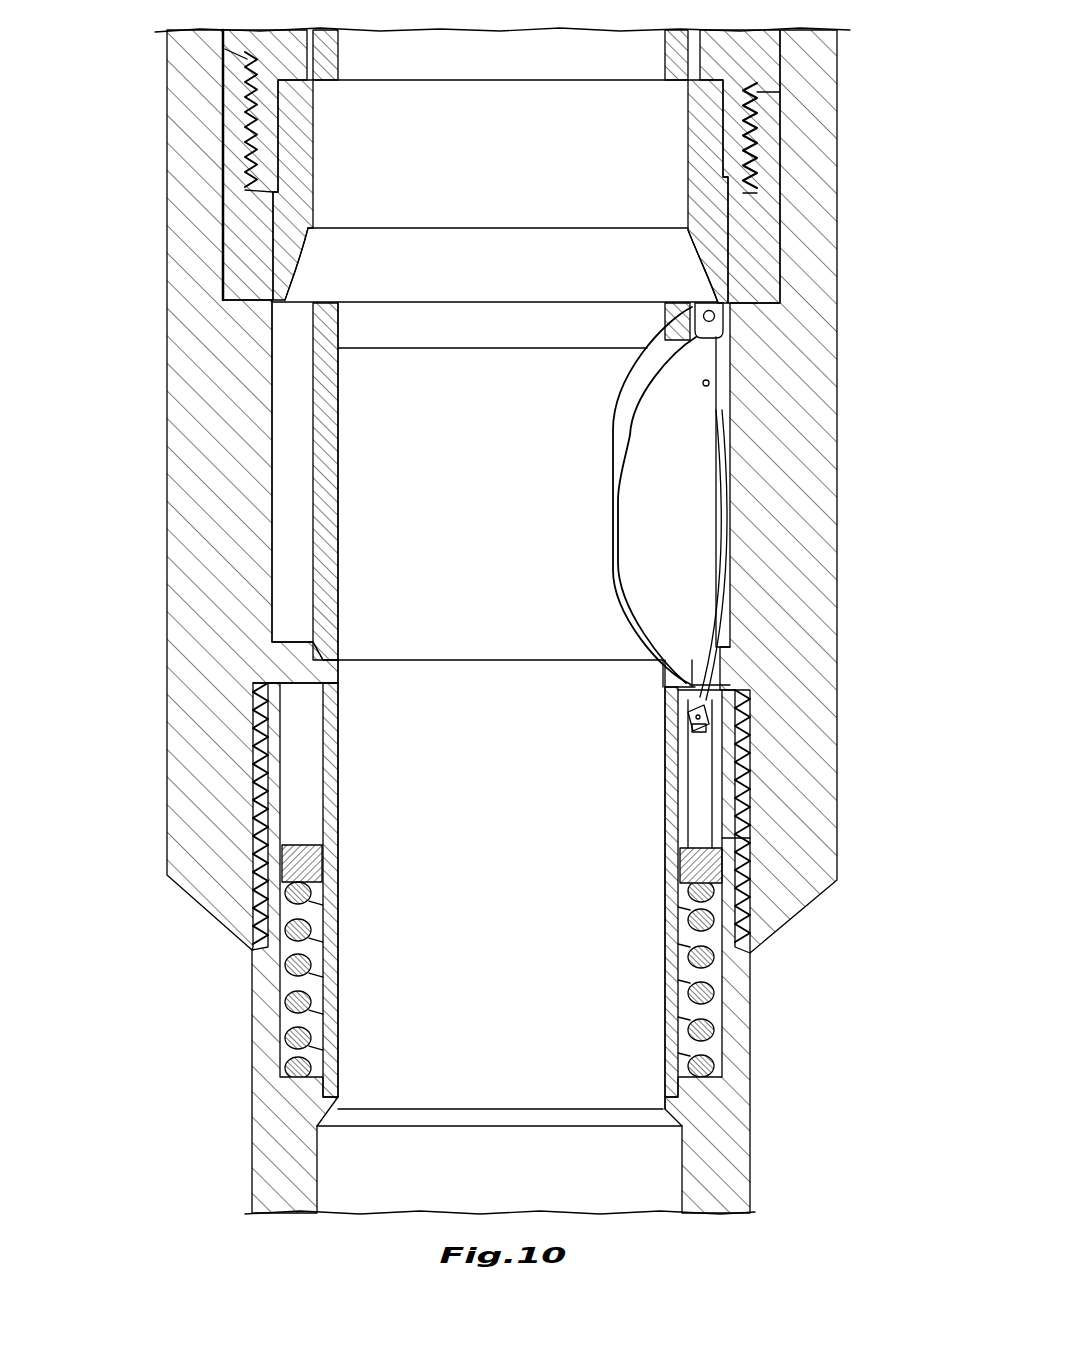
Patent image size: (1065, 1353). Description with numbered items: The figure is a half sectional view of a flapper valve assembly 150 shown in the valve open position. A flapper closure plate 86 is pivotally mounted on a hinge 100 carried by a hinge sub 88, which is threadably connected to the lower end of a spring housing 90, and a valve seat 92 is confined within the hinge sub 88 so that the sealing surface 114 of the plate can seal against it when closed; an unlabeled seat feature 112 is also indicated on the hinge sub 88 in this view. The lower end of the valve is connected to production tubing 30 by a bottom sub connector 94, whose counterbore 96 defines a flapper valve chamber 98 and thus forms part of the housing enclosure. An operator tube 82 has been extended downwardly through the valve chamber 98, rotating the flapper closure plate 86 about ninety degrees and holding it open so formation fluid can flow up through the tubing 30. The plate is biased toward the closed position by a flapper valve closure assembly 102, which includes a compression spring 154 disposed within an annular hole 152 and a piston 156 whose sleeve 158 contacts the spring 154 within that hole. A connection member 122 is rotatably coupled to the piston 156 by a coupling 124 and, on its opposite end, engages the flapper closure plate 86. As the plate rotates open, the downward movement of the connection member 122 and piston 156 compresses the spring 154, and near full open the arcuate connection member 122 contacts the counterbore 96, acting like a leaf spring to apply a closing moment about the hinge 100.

The production tubing 30 is at (277, 973).
The operator tube 82 is at (323, 462).
The flapper closure plate 86 is at (693, 405).
The hinge sub 88 is at (238, 263).
The spring housing 90 is at (258, 62).
The valve seat 92 is at (292, 158).
The bottom sub connector 94 is at (185, 360).
The counterbore 96 is at (272, 583).
The flapper valve chamber 98 is at (293, 518).
The hinge 100 is at (719, 323).
The flapper valve closure assembly 102 is at (662, 871).
The seat surface 112 is at (300, 250).
The sealing surface 114 is at (617, 617).
The connection member 122 is at (719, 446).
The coupling 124 is at (697, 713).
The flapper valve assembly 150 is at (886, 89).
The annular hole 152 is at (722, 870).
The compression spring 154 is at (717, 980).
The piston 156 is at (700, 802).
The sleeve 158 is at (752, 867).